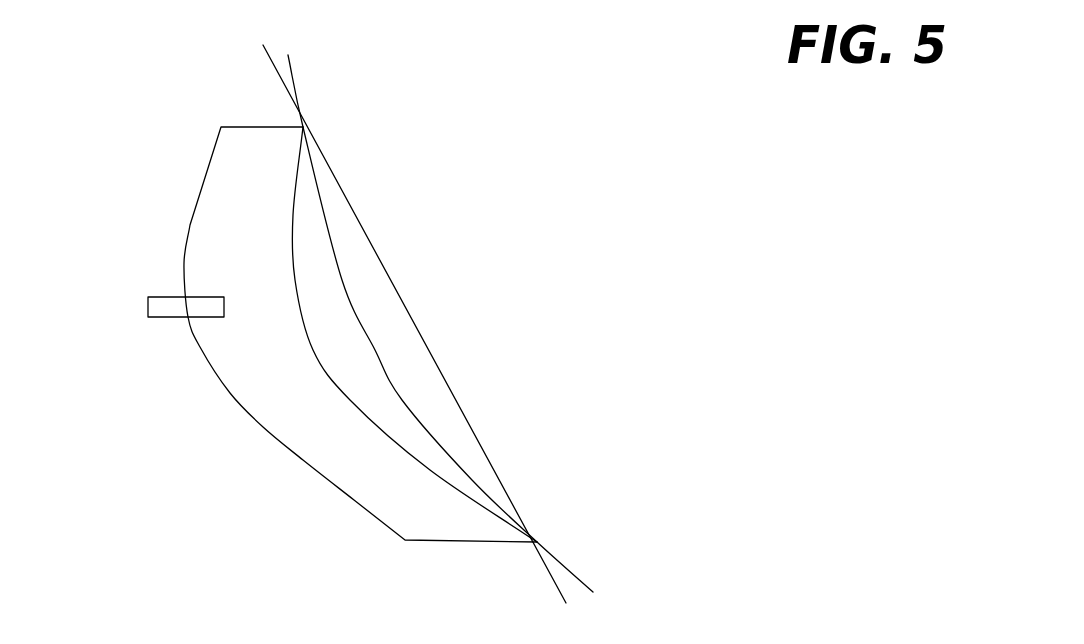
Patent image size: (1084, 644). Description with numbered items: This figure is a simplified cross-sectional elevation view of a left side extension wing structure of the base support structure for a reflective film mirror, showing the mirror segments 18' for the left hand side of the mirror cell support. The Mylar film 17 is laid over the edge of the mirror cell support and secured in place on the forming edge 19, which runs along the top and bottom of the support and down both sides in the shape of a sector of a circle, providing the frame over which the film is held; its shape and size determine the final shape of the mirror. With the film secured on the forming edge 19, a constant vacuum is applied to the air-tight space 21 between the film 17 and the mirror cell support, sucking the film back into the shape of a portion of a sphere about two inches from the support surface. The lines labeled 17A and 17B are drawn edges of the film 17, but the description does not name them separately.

The Mylar film 17 is at (300, 308).
The straight blade edge line 17A is at (453, 393).
The curved blade edge 17B is at (373, 350).
The forming edge 19 is at (295, 208).
The air-tight space 21 is at (245, 187).
The mirror segments 18' is at (130, 374).